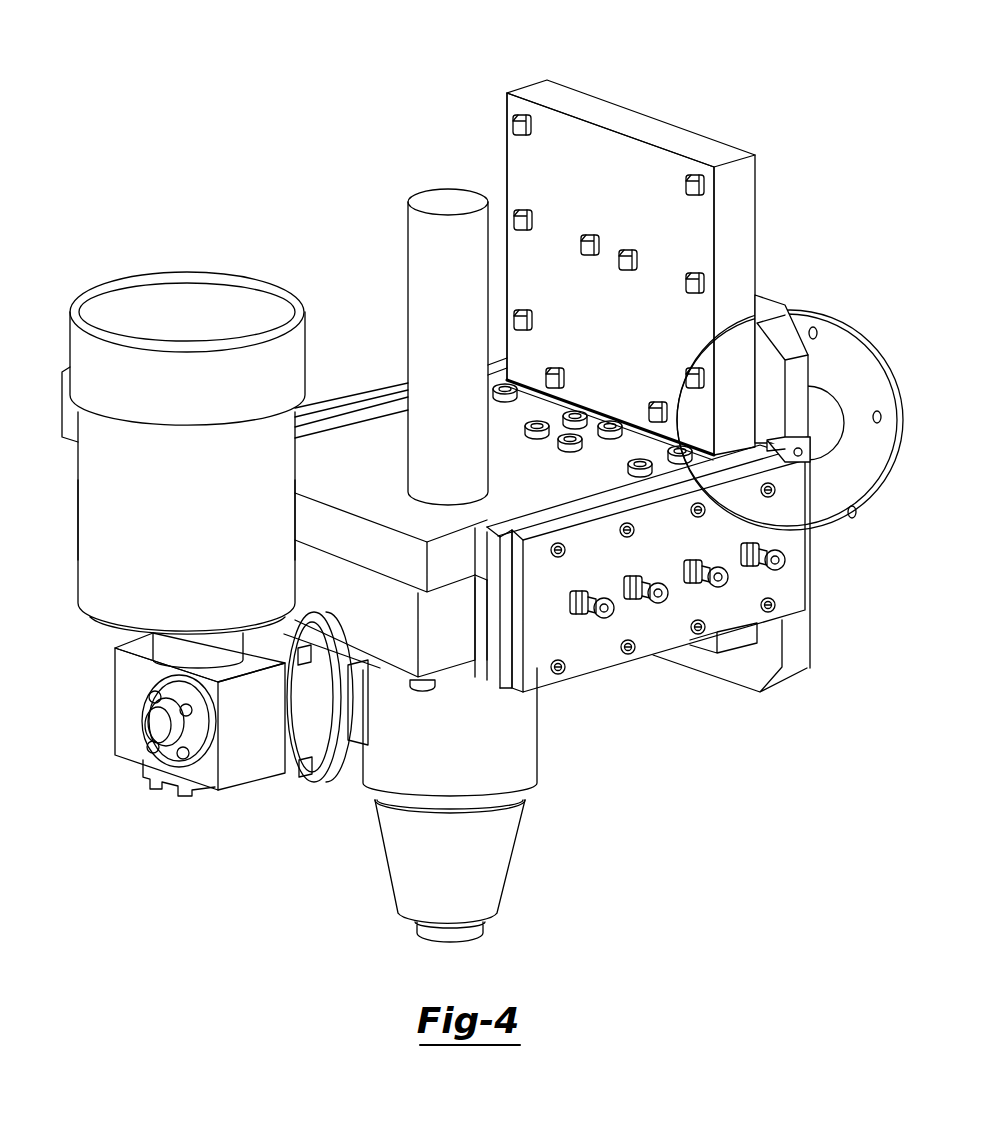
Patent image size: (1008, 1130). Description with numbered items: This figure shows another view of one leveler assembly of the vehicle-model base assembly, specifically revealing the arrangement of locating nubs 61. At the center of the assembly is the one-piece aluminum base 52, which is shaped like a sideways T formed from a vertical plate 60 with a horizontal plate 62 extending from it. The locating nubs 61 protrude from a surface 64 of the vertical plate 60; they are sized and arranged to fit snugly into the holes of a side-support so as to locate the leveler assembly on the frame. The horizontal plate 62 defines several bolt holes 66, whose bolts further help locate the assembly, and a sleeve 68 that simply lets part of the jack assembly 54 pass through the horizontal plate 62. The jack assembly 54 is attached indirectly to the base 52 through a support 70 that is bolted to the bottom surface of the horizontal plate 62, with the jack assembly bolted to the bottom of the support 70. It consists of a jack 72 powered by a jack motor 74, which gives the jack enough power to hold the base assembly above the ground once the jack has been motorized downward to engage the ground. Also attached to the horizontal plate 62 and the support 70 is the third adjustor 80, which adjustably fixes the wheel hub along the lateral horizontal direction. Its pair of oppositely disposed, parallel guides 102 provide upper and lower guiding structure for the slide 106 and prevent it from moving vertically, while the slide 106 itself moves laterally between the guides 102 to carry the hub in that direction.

The base 52 is at (760, 227).
The jack assembly 54 is at (240, 270).
The vertical plate 60 is at (692, 142).
The locating nubs 61 is at (655, 410).
The horizontal plate 62 is at (368, 440).
The surface 64 is at (593, 143).
The bolt holes 66 is at (506, 398).
The sleeve 68 is at (410, 485).
The support 70 is at (330, 574).
The jack 72 is at (490, 874).
The jack motor 74 is at (194, 492).
The third adjustor 80 is at (593, 672).
The guides 102 is at (498, 553).
The slide 106 is at (497, 621).